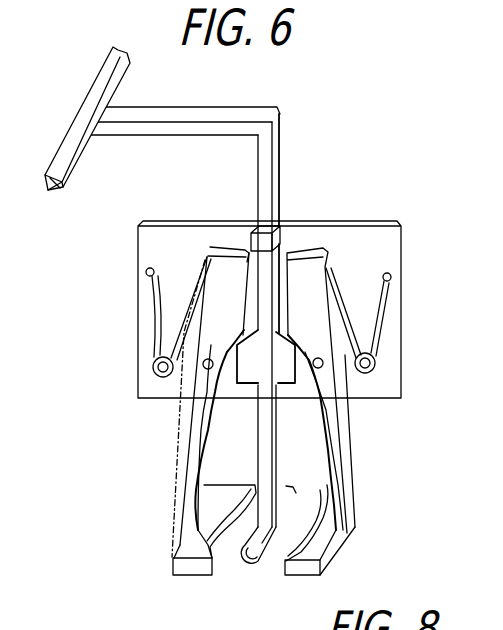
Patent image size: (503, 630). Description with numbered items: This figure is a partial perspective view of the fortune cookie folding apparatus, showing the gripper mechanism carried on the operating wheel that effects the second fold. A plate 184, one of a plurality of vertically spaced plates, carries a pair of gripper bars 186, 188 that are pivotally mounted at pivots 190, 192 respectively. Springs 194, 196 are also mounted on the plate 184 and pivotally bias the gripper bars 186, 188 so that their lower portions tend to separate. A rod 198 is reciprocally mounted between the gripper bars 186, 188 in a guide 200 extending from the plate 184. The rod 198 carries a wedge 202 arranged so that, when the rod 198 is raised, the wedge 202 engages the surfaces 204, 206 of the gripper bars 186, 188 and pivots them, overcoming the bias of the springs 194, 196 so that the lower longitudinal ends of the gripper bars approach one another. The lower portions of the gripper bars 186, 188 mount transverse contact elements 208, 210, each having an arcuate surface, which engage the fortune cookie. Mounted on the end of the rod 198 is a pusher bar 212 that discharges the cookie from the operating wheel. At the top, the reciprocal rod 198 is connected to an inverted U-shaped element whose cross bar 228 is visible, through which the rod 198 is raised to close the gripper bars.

The plate 184 is at (373, 242).
The gripper bar 186 is at (187, 485).
The gripper bar 188 is at (338, 480).
The pivot 190 is at (205, 369).
The pivot 192 is at (322, 367).
The spring 194 is at (157, 322).
The spring 196 is at (377, 315).
The rod 198 is at (268, 422).
The guide 200 is at (282, 228).
The wedge 202 is at (258, 375).
The surface 204 is at (243, 330).
The surface 206 is at (292, 335).
The contact element 208 is at (188, 575).
The contact element 210 is at (302, 575).
The pusher bar 212 is at (266, 558).
The cross bar 228 is at (203, 115).